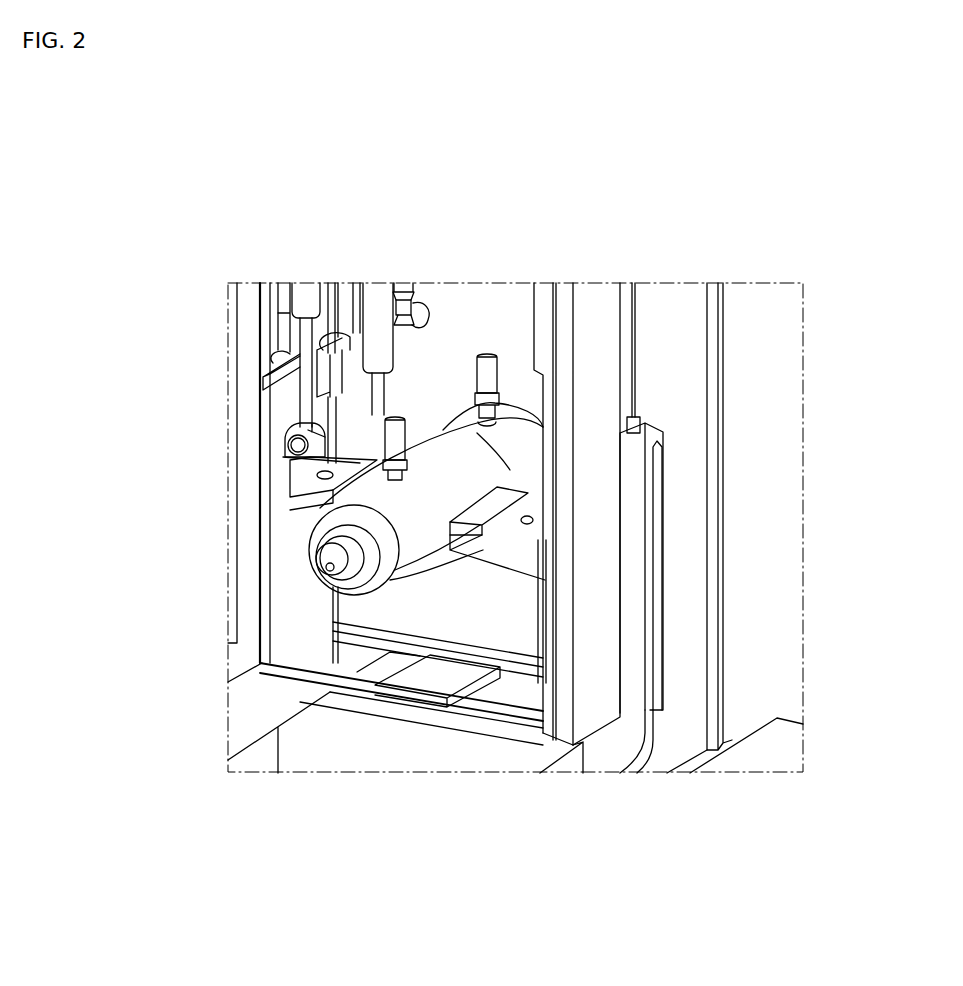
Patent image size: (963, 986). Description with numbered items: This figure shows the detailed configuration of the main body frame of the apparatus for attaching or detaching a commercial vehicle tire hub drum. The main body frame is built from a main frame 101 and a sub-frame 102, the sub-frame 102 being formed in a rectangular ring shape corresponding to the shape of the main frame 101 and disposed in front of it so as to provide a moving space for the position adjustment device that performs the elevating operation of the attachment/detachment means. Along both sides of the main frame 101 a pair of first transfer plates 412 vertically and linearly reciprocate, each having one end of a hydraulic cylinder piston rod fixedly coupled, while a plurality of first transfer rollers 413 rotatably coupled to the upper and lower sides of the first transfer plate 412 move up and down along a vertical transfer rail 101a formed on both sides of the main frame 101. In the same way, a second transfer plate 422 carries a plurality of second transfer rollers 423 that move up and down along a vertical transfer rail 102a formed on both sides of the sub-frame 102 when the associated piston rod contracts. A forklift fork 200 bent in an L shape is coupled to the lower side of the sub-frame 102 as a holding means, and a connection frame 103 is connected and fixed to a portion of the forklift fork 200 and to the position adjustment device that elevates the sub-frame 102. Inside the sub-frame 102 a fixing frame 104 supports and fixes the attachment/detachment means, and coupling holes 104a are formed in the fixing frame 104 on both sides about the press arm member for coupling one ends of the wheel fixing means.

The main frame 101 is at (318, 283).
The vertical transfer rail 101a is at (340, 283).
The sub-frame 102 is at (256, 294).
The vertical transfer rail 102a is at (275, 283).
The connection frame 103 is at (658, 555).
The fixing frame 104 is at (497, 535).
The coupling hole 104a is at (527, 525).
The forklift fork 200 is at (625, 745).
The first transfer plate 412 is at (363, 403).
The first transfer roller 413 is at (330, 343).
The second transfer plate 422 is at (287, 424).
The second transfer roller 423 is at (270, 352).